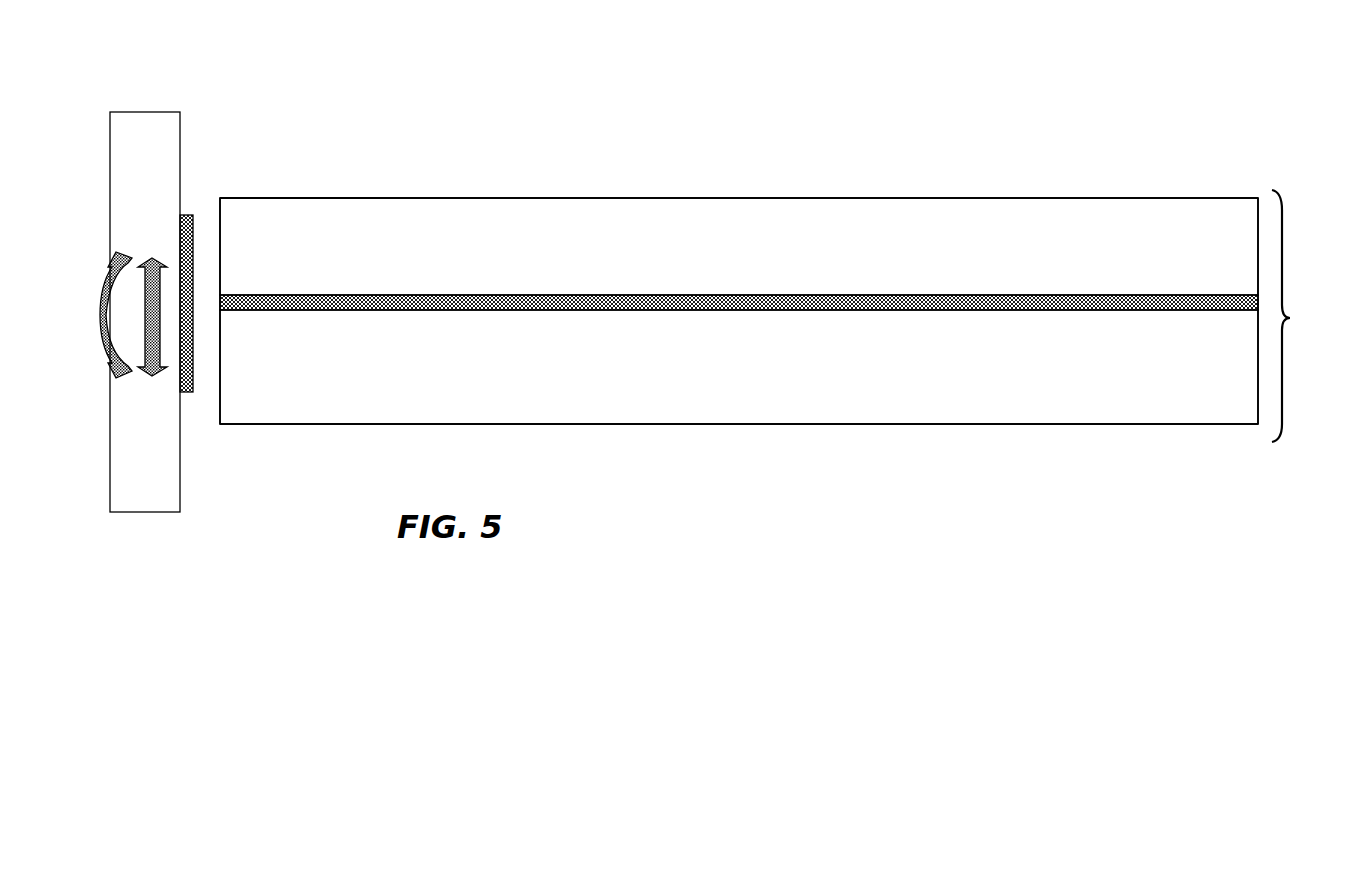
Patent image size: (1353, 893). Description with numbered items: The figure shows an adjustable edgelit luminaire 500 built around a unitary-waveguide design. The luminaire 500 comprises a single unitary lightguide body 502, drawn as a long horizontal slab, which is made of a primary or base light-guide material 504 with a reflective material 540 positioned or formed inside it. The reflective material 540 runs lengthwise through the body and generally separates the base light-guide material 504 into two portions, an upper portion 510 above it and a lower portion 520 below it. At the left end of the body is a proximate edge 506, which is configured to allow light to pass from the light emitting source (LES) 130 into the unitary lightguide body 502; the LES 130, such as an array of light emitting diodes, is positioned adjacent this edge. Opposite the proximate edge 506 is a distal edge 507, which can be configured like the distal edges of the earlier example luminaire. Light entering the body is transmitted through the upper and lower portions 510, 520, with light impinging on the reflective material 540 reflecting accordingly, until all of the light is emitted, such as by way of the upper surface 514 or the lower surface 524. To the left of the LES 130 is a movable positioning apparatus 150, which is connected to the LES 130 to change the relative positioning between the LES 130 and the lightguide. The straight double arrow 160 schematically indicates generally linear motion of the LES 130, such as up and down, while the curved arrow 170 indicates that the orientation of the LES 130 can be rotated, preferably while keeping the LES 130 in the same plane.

The adjustable edgelit luminaire 500 is at (1109, 124).
The unitary lightguide body 502 is at (1286, 317).
The base light-guide material 504 is at (692, 198).
The proximate edge 506 is at (214, 406).
The distal edge 507 is at (1246, 387).
The upper portion 510 is at (589, 229).
The upper surface 514 is at (377, 194).
The lower portion 520 is at (906, 393).
The lower surface 524 is at (658, 430).
The reflective material 540 is at (1047, 295).
The movable positioning apparatus 150 is at (180, 112).
The linear motion 160 is at (153, 247).
The rotational motion 170 is at (125, 388).
The light emitting source (LES) 130 is at (193, 215).